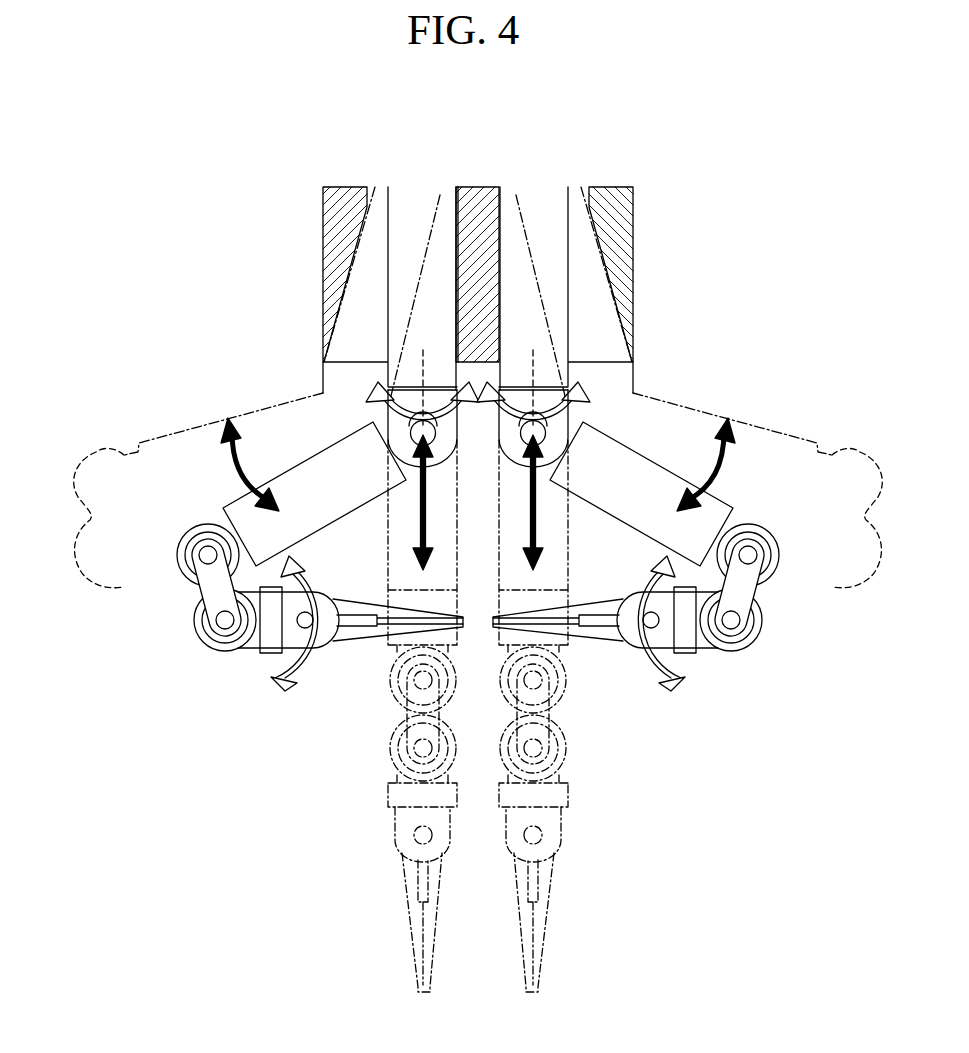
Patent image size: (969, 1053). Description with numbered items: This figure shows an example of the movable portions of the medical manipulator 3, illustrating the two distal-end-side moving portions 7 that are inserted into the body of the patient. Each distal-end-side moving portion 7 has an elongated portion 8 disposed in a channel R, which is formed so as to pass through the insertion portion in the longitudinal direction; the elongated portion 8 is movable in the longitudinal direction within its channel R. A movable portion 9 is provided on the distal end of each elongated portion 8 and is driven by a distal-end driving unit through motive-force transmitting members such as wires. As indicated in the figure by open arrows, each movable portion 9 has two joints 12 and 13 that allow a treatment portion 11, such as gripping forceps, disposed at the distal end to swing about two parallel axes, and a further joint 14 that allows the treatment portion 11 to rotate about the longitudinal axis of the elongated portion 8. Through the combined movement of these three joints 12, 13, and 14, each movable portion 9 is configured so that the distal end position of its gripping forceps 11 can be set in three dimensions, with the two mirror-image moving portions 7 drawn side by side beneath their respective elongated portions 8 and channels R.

The medical manipulator 3 is at (86, 142).
The distal-end-side moving portion 7 is at (138, 420).
The elongated portion 8 is at (388, 280).
The movable portion 9 is at (203, 662).
The treatment portion 11 is at (350, 645).
The joint 12 is at (165, 585).
The joint 13 is at (513, 485).
The joint 14 is at (366, 386).
The channel R is at (367, 230).